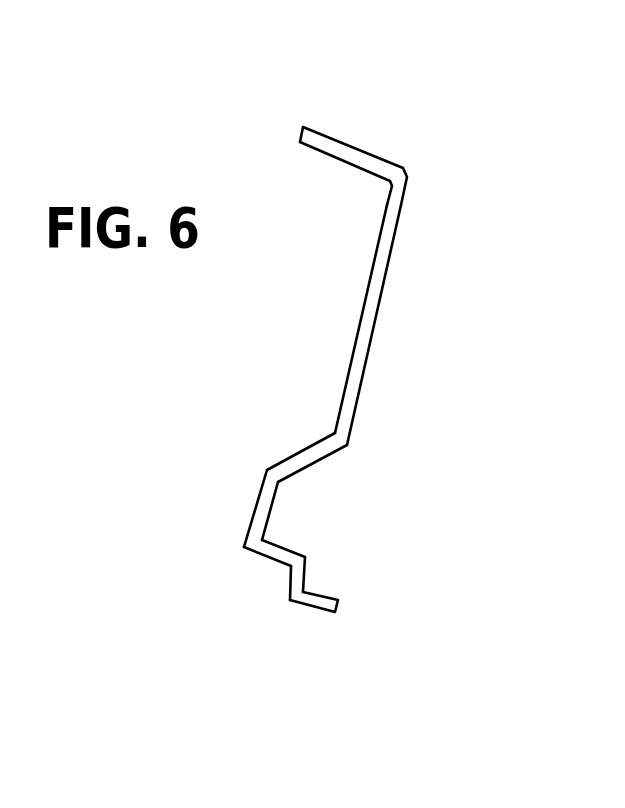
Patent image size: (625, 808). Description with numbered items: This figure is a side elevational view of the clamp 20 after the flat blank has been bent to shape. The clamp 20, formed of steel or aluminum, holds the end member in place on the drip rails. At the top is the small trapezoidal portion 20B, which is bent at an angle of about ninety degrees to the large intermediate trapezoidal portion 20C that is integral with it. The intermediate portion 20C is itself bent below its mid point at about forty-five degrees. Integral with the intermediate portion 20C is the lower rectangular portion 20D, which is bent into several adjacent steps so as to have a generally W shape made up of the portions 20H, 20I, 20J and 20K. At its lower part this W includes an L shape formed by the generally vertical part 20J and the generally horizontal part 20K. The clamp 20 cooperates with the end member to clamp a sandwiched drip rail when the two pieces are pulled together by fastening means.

The clamp 20 is at (388, 338).
The small trapezoidal portion 20B is at (340, 143).
The intermediate trapezoidal portion 20C is at (348, 408).
The lower rectangular portion 20D is at (249, 488).
The portion of W-shaped lower end 20H is at (261, 514).
The portion of W-shaped lower end 20I is at (284, 554).
The generally vertical part 20J is at (298, 580).
The generally horizontal part 20K is at (318, 598).